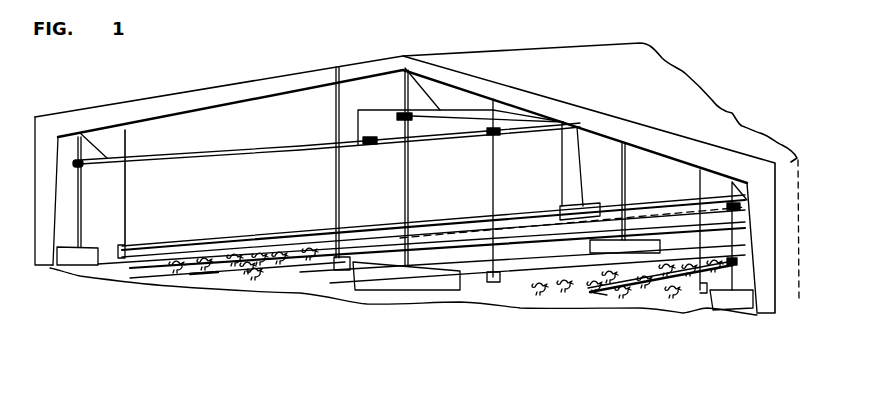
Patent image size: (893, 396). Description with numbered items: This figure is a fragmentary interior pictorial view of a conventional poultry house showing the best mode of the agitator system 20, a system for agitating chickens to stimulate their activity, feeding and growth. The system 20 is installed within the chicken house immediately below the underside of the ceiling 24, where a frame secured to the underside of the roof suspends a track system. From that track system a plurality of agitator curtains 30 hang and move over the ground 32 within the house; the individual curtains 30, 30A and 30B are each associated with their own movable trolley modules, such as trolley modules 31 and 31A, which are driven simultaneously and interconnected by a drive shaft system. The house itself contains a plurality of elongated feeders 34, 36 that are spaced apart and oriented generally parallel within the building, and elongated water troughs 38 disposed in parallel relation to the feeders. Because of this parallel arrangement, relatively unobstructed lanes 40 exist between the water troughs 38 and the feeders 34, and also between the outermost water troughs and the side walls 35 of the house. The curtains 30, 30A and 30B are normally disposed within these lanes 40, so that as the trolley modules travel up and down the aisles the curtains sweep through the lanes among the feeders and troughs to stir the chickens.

The agitator system 20 is at (297, 110).
The ceiling 24 is at (178, 118).
The agitator curtain 30 is at (437, 282).
The agitator curtain 30A is at (80, 258).
The agitator curtain 30B is at (715, 302).
The movable trolley module 31 is at (550, 131).
The movable trolley module 31A is at (102, 130).
The ground 32 is at (316, 283).
The elongated feeder 34 is at (207, 275).
The side wall 35 is at (196, 187).
The elongated feeder 36 is at (633, 292).
The elongated water trough 38 is at (190, 243).
The lane 40 is at (220, 232).